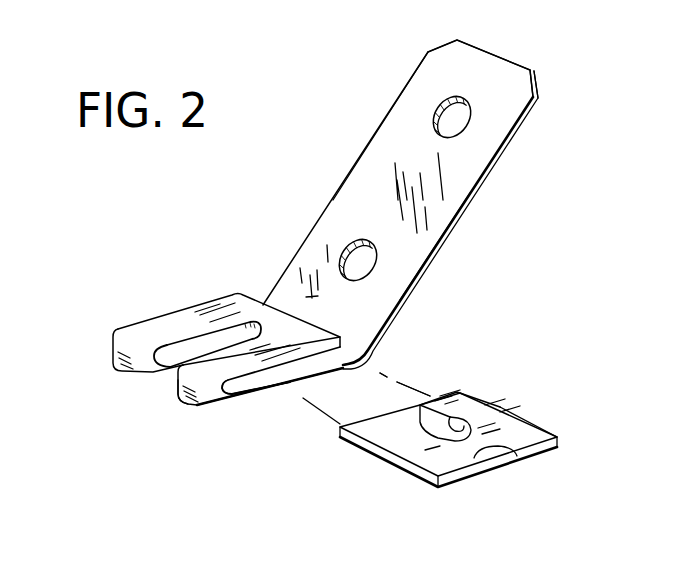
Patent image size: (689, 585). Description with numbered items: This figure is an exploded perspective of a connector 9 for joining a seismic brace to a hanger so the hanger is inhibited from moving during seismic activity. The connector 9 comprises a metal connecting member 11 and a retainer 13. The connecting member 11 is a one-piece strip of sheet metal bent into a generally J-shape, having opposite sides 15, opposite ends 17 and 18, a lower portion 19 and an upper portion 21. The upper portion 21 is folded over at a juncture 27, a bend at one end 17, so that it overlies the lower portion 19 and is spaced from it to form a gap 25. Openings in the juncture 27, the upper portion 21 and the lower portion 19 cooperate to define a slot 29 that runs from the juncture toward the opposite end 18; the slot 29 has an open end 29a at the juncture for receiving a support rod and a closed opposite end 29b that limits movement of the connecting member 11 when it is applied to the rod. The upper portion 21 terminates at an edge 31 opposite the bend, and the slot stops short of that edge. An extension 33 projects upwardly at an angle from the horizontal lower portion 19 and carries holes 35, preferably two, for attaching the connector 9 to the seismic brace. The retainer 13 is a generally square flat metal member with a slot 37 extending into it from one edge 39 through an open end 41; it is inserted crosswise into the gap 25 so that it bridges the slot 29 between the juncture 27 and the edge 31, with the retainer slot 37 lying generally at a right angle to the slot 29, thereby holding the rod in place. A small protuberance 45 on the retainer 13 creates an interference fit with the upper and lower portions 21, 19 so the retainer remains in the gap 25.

The connector 9 is at (211, 368).
The metal connecting member 11 is at (470, 193).
The retainer 13 is at (463, 409).
The opposite sides 15 is at (320, 212).
The end 17 is at (115, 362).
The opposite end 18 is at (495, 48).
The lower portion 19 is at (260, 406).
The upper portion 21 is at (152, 318).
The gap 25 is at (302, 394).
The juncture 27 is at (132, 364).
The slot 29 is at (263, 338).
The open end 29a is at (212, 415).
The closed opposite end 29b is at (240, 316).
The edge 31 is at (340, 330).
The extension 33 is at (512, 101).
The holes 35 is at (435, 120).
The slot 37 is at (490, 406).
The edge 39 is at (446, 393).
The open end 41 is at (407, 420).
The protuberance 45 is at (528, 430).